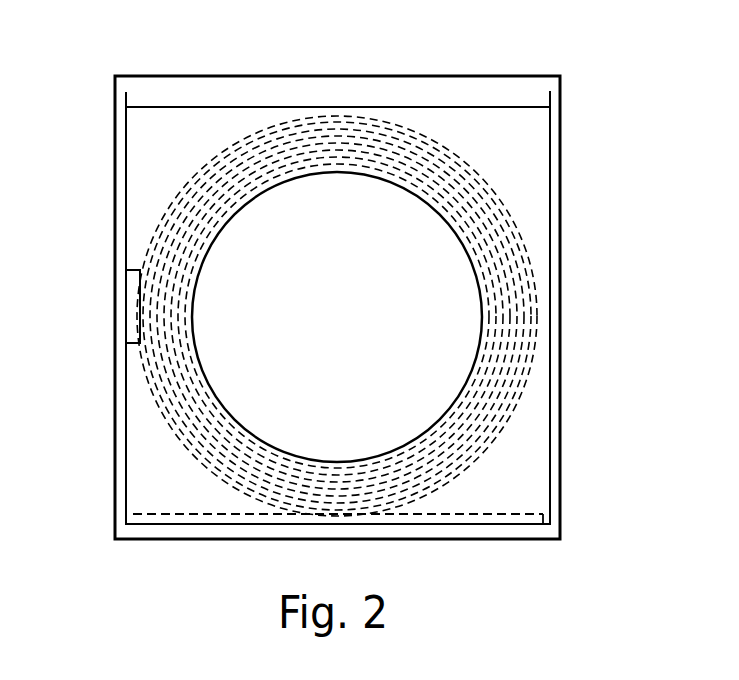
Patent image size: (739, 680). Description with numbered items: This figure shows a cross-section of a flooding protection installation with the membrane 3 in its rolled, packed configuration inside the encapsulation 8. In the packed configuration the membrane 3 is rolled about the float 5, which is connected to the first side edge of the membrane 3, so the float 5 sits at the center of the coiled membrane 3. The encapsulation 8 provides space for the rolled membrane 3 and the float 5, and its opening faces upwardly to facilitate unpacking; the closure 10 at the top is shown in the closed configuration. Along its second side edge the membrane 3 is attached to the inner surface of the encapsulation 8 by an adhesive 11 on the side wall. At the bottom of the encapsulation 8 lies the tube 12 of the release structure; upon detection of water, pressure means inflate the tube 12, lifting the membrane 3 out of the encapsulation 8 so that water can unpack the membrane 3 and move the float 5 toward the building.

The membrane 3 is at (517, 312).
The float 5 is at (440, 265).
The encapsulation 8 is at (120, 453).
The closure 10 is at (475, 98).
The adhesive 11 is at (134, 309).
The tube 12 is at (525, 515).